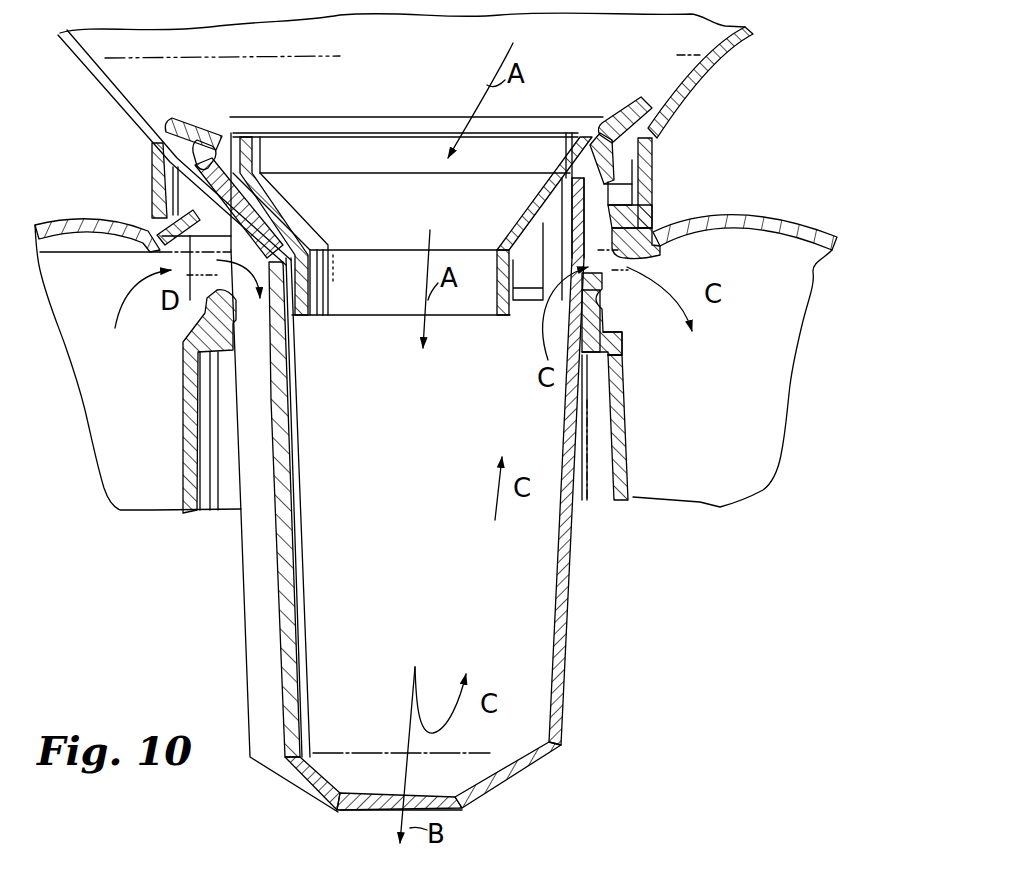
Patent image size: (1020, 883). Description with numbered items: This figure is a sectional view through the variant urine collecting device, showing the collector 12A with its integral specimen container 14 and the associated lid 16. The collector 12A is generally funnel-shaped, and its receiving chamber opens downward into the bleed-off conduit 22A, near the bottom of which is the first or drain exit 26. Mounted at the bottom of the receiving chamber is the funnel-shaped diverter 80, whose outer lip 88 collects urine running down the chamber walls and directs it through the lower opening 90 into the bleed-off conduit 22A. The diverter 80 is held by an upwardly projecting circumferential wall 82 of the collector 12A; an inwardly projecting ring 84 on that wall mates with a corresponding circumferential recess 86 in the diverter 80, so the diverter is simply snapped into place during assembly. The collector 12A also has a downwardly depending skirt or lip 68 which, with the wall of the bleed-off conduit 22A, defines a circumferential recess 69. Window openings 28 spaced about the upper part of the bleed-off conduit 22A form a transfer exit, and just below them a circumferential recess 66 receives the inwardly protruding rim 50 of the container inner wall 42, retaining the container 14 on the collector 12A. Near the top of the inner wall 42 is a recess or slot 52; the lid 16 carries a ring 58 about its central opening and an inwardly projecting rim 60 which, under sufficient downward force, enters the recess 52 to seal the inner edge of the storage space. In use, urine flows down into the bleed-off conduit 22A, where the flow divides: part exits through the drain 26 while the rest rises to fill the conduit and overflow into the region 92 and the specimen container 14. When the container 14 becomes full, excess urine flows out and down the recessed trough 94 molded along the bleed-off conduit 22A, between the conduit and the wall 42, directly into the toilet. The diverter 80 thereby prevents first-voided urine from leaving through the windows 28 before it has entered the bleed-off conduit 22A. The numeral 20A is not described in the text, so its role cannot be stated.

The collector 12A is at (760, 39).
The lid 20A is at (332, 46).
The diverter or deflector insert 80 is at (383, 115).
The circumferential wall 82 is at (604, 124).
The inwardly projecting ring 84 is at (646, 132).
The circumferential recess 86 is at (571, 163).
The outer lip 88 is at (240, 107).
The circumferential recess 69 is at (623, 180).
The circumferential skirt or lip 68 is at (653, 178).
The ring 58 is at (655, 202).
The inwardly projecting rim 60 is at (661, 254).
The lid 16 is at (781, 211).
The specimen container 14 is at (629, 507).
The inner wall 42 is at (183, 474).
The recess or slot 52 is at (604, 300).
The protruding lip or rim 50 is at (623, 350).
The circumferential recess 66 is at (583, 318).
The window openings 28 is at (537, 300).
The lower opening 90 is at (380, 315).
The region 92 is at (578, 248).
The recessed trough 94 is at (253, 567).
The bleed-off conduit 22A is at (568, 650).
The first or drain exit 26 is at (395, 813).